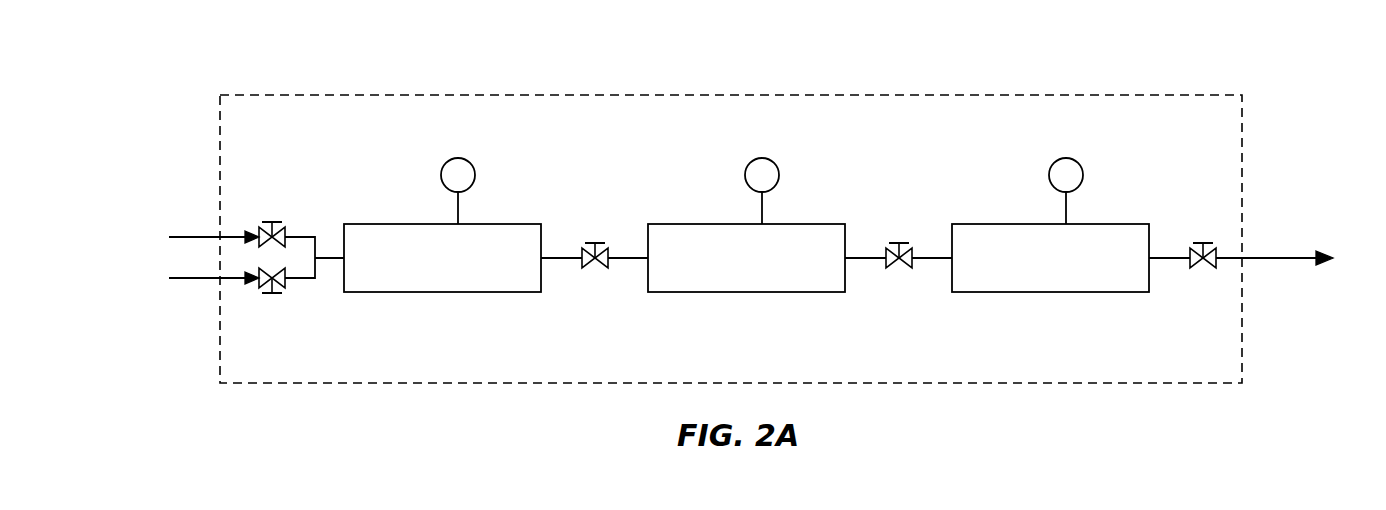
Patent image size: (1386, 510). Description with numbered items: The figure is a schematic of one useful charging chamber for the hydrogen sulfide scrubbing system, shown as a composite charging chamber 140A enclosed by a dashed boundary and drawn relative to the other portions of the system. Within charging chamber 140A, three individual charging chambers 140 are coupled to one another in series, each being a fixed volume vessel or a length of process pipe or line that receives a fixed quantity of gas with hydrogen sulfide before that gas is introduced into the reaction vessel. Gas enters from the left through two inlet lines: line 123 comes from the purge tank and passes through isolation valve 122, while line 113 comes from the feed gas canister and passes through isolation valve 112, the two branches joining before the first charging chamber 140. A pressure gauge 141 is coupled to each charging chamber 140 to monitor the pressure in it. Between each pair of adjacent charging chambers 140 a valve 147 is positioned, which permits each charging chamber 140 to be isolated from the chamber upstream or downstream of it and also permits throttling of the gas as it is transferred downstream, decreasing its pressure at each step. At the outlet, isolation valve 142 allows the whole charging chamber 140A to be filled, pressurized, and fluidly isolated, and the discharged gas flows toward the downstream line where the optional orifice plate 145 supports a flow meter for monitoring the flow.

The charging chamber 140A is at (1128, 63).
The charging chamber 140 is at (746, 258).
The pressure gauge 141 is at (458, 158).
The isolation valve 142 is at (1208, 243).
The orifice plate 145 is at (1268, 258).
The valve 147 is at (600, 243).
The isolation valve 122 is at (272, 222).
The isolation valve 112 is at (272, 293).
The line 123 is at (198, 237).
The line 113 is at (198, 278).